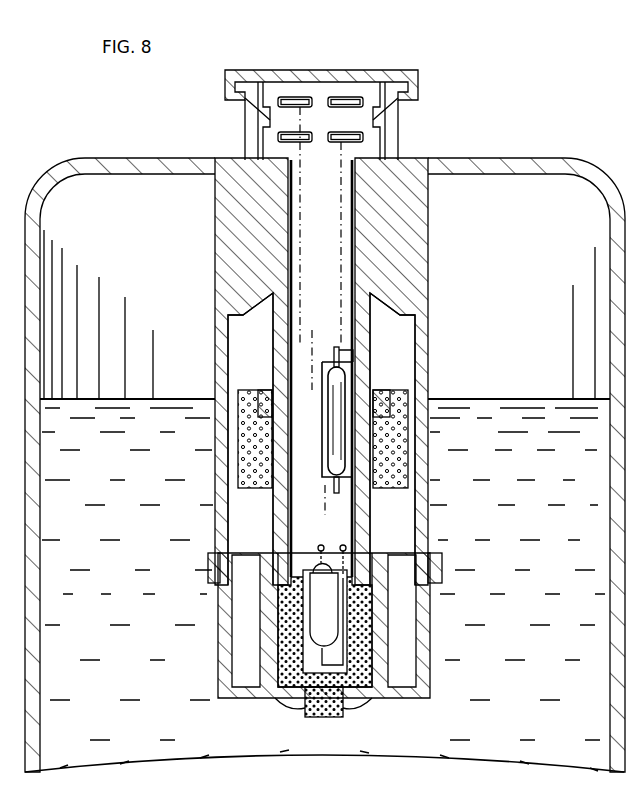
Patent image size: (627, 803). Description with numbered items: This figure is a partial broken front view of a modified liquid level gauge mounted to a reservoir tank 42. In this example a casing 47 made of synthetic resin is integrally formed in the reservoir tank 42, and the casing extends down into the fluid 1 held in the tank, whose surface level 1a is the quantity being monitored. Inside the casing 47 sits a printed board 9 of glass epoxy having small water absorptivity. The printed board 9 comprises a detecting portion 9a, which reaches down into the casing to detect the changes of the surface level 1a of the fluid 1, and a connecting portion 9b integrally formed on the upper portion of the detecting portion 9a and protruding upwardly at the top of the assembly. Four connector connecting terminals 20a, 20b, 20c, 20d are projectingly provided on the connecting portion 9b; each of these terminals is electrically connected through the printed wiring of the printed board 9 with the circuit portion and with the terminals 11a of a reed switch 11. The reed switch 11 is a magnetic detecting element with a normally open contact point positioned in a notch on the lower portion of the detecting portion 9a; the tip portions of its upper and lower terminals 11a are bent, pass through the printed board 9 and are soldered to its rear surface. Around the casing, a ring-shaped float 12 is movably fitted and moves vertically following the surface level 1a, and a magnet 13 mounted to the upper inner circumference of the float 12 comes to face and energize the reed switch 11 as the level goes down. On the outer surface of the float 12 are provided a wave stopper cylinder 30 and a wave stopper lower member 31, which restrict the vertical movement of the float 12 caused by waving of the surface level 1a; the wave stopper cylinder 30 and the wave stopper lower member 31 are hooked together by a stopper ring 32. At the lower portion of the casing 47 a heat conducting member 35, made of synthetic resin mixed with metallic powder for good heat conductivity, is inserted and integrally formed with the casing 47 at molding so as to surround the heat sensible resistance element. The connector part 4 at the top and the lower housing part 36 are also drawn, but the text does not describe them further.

The fluid 1 is at (463, 398).
The surface level 1a is at (540, 398).
The connector 4 is at (418, 72).
The printed board 9 is at (327, 251).
The detecting portion 9a is at (300, 231).
The connecting portion 9b is at (380, 82).
The reed switch 11 is at (348, 384).
The terminals 11a is at (340, 349).
The float 12 is at (238, 391).
The magnet 13 is at (267, 393).
The connector connecting terminal 20a is at (289, 97).
The connector connecting terminal 20b is at (339, 97).
The connector connecting terminal 20c is at (280, 138).
The connector connecting terminal 20d is at (362, 138).
The wave stopper cylinder 30 is at (215, 330).
The wave stopper lower member 31 is at (218, 640).
The stopper ring 32 is at (358, 703).
The heat conducting member 35 is at (315, 712).
The sensor housing 36 is at (313, 621).
The reservoir tank 42 is at (93, 159).
The casing 47 is at (432, 287).